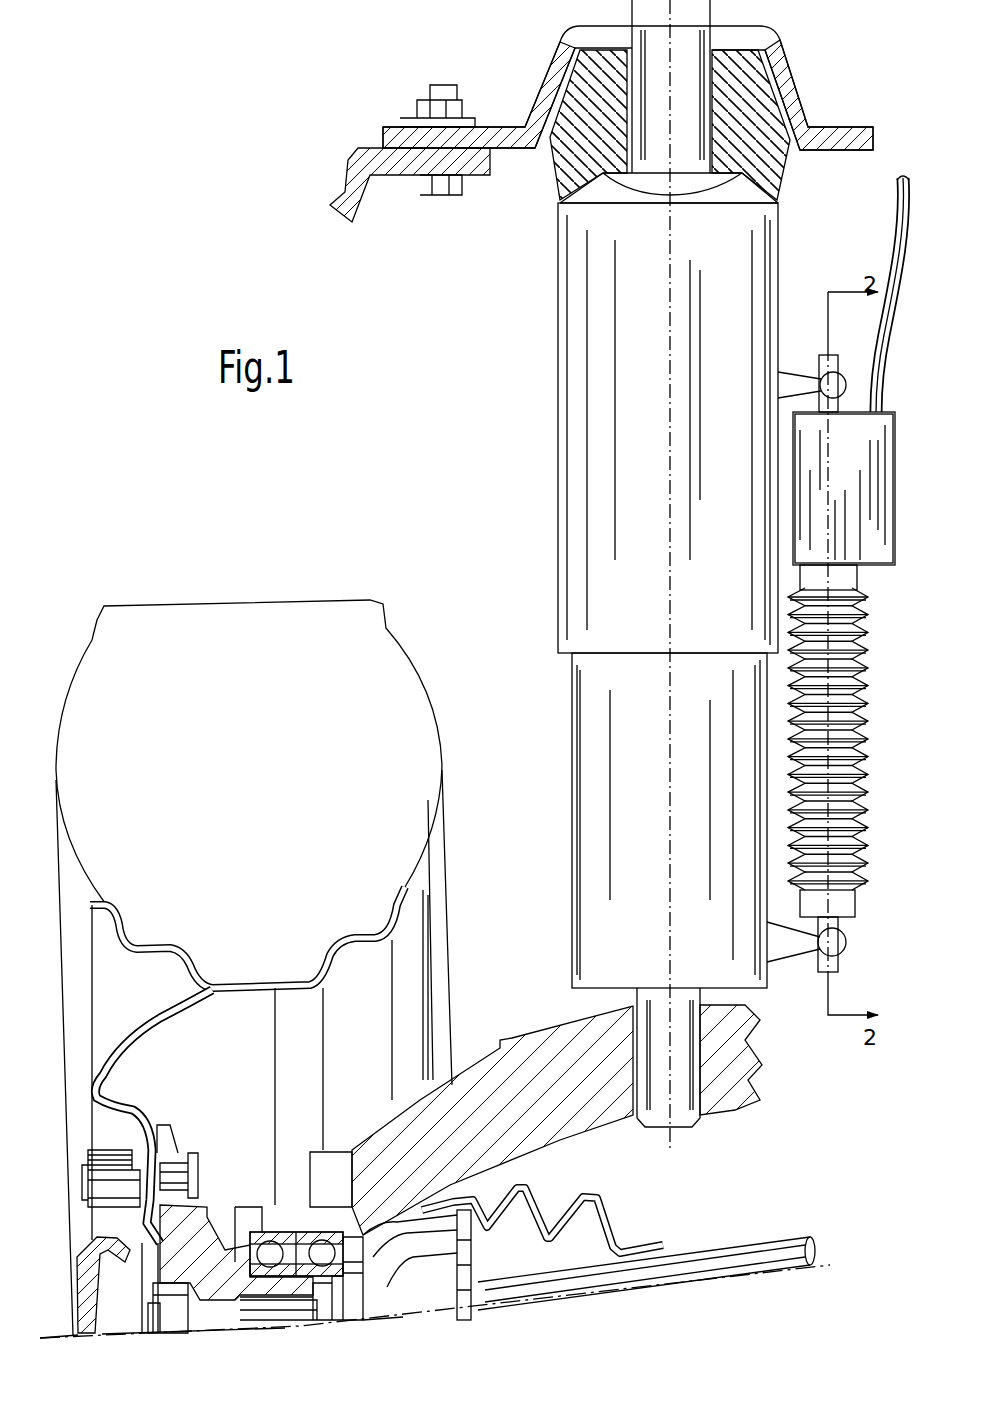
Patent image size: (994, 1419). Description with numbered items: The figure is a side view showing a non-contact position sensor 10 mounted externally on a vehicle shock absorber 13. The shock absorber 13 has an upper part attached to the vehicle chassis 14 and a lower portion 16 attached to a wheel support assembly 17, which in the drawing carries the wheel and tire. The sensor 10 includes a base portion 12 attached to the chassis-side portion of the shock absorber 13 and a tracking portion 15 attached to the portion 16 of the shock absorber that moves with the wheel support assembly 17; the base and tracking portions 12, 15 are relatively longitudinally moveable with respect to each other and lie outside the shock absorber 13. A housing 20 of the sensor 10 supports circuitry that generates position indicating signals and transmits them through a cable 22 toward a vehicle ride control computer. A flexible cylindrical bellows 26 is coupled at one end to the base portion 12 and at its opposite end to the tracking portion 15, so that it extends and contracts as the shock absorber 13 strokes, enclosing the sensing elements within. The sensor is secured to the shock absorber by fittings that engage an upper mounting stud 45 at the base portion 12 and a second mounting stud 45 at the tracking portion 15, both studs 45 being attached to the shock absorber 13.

The non-contact position sensor 10 is at (872, 690).
The base portion 12 is at (896, 522).
The shock absorber 13 is at (600, 403).
The vehicle chassis 14 is at (776, 67).
The tracking portion 15 is at (845, 905).
The portion of the shock absorber 16 is at (612, 808).
The wheel support assembly 17 is at (588, 1085).
The housing 20 is at (871, 462).
The cable 22 is at (905, 232).
The flexible cylindrical bellows 26 is at (862, 828).
The mounting stud 45 is at (797, 380).